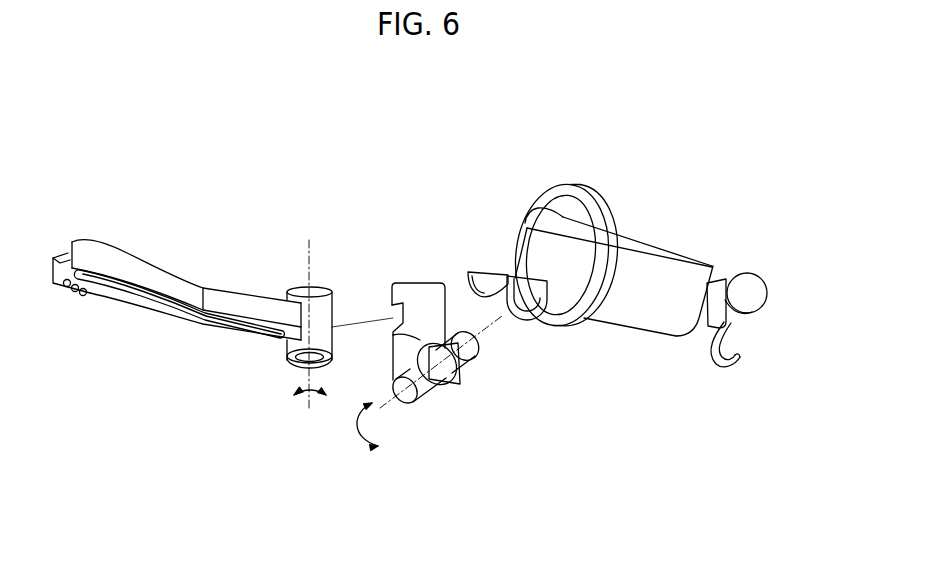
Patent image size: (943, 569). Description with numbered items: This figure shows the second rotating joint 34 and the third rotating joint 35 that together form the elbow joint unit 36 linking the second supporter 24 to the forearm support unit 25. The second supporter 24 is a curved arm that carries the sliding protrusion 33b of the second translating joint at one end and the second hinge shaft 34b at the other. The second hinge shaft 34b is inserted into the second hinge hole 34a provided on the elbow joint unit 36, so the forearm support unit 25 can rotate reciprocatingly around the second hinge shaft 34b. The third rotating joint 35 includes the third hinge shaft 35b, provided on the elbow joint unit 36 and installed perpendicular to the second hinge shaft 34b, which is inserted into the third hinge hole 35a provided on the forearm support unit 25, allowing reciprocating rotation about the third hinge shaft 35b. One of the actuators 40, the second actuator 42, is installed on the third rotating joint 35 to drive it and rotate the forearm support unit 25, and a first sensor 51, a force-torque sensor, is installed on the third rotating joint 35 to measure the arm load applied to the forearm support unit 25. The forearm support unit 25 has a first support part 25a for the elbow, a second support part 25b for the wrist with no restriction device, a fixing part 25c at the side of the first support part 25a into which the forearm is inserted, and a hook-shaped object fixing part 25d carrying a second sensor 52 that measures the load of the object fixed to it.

The second supporter 24 is at (145, 278).
The sliding protrusion 33b is at (62, 262).
The second rotating joint 34 is at (360, 237).
The elbow joint unit 36 is at (425, 303).
The second hinge hole 34a is at (402, 281).
The second hinge shaft 34b is at (317, 297).
The third rotating joint 35 is at (507, 366).
The third hinge hole 35a is at (510, 312).
The third hinge shaft 35b is at (462, 376).
The actuators 40 is at (429, 412).
The second actuator 42 is at (410, 412).
The first sensor 51 is at (438, 401).
The forearm support unit 25 is at (633, 265).
The first support part 25a is at (493, 272).
The second support part 25b is at (690, 337).
The fixing part 25c is at (600, 202).
The object fixing part 25d is at (735, 366).
The second sensor 52 is at (752, 322).